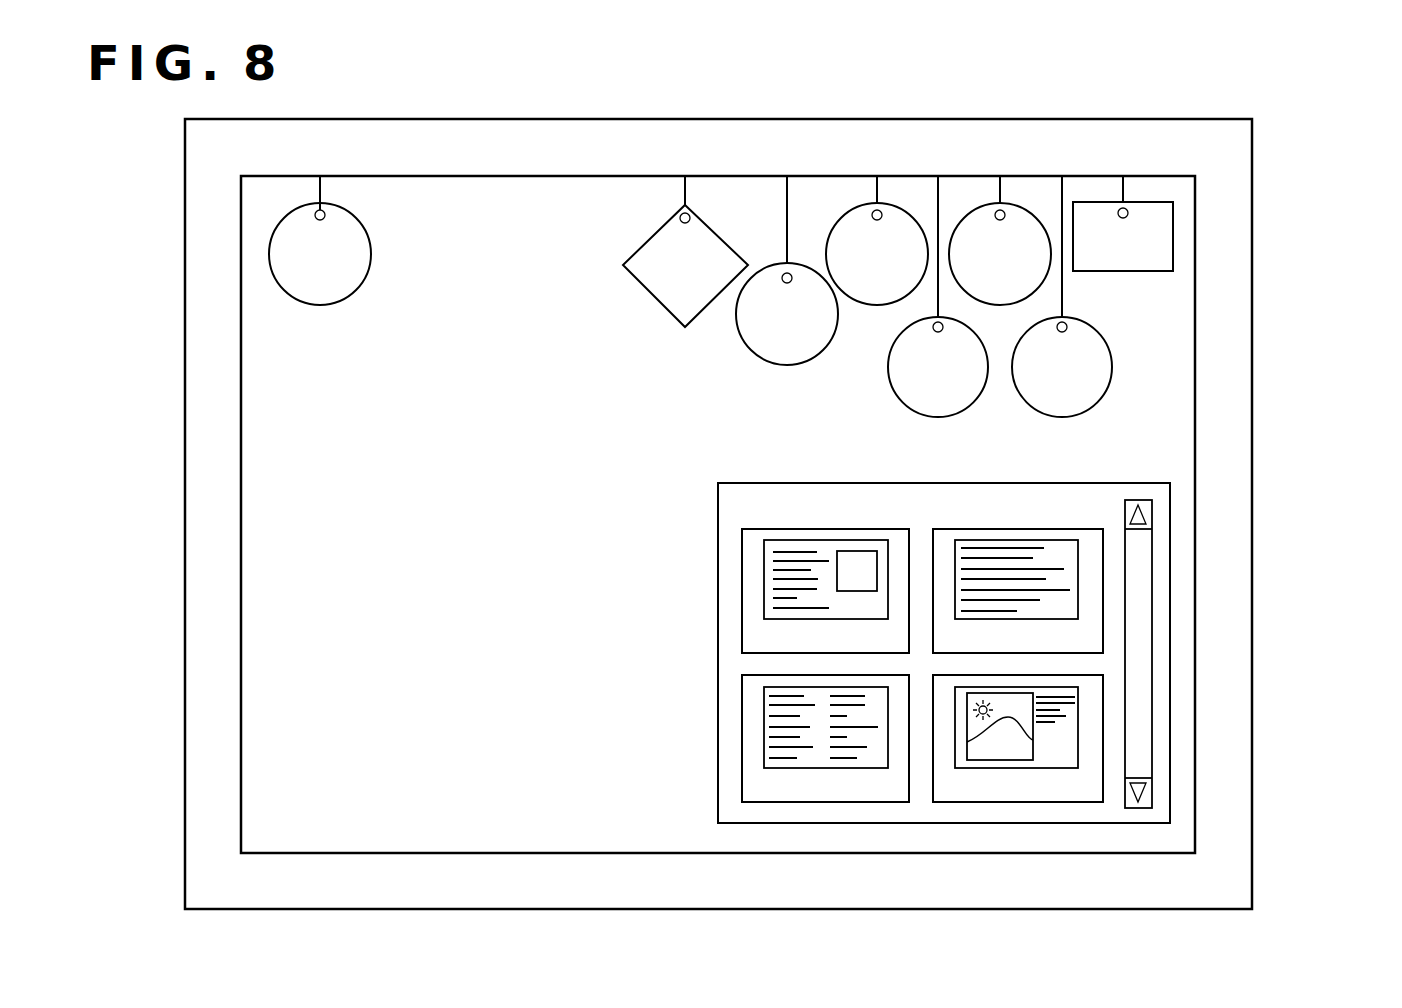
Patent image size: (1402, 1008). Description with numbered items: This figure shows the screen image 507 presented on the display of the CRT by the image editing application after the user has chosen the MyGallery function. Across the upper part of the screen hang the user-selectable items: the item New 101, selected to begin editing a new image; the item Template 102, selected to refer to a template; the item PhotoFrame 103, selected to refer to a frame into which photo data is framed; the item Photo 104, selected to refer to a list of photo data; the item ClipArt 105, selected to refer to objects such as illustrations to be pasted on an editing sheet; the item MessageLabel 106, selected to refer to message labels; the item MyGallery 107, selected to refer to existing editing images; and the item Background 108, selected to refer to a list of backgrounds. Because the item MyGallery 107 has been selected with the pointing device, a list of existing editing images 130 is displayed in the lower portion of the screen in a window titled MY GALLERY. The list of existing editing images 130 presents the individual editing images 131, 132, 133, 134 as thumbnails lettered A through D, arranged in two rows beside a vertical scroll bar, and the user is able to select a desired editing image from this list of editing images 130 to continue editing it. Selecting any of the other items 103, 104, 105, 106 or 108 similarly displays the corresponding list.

The item New 101 is at (348, 208).
The item Template 102 is at (660, 227).
The item PhotoFrame 103 is at (763, 268).
The item Photo 104 is at (855, 203).
The item ClipArt 105 is at (970, 407).
The item MessageLabel 106 is at (978, 203).
The item MyGallery 107 is at (1093, 407).
The item Background 108 is at (1100, 200).
The list of existing editing images 130 is at (718, 667).
The thumbnail A 131 is at (835, 528).
The thumbnail B 132 is at (1025, 528).
The thumbnail C 133 is at (850, 802).
The thumbnail D 134 is at (1042, 802).
The display screen 507 is at (1252, 538).